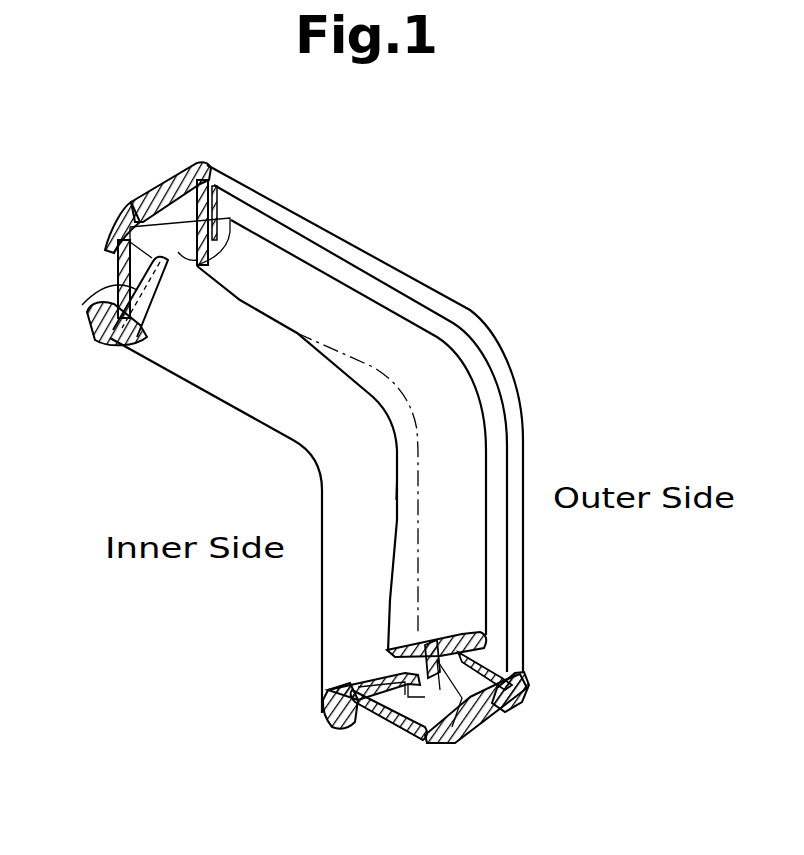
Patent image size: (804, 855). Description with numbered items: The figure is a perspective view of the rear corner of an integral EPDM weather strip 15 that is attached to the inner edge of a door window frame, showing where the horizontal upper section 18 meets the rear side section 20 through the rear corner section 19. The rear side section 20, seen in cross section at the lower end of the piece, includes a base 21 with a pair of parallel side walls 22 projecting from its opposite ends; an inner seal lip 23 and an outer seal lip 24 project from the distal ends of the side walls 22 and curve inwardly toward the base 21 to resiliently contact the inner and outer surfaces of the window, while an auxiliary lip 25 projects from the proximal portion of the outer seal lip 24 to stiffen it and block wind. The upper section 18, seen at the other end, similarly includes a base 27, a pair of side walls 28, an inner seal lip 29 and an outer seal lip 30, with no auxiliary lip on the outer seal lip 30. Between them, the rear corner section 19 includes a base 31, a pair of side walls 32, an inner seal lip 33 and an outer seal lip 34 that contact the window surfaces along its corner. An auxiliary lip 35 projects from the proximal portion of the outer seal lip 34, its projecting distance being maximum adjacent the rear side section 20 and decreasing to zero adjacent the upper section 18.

The weather strip 15 is at (598, 358).
The upper section 18 is at (158, 200).
The rear corner section 19 is at (503, 345).
The rear side section 20 is at (468, 717).
The base 21 is at (448, 697).
The side walls 22 is at (493, 660).
The inner seal lip 23 is at (393, 678).
The outer seal lip 24 is at (485, 712).
The auxiliary lip 25 is at (397, 624).
The base 27 is at (131, 205).
The side walls 28 is at (220, 207).
The inner seal lip 29 is at (108, 290).
The outer seal lip 30 is at (181, 272).
The base 31 is at (478, 312).
The side walls 32 is at (492, 388).
The inner seal lip 33 is at (315, 433).
The outer seal lip 34 is at (281, 325).
The auxiliary lip 35 is at (397, 506).